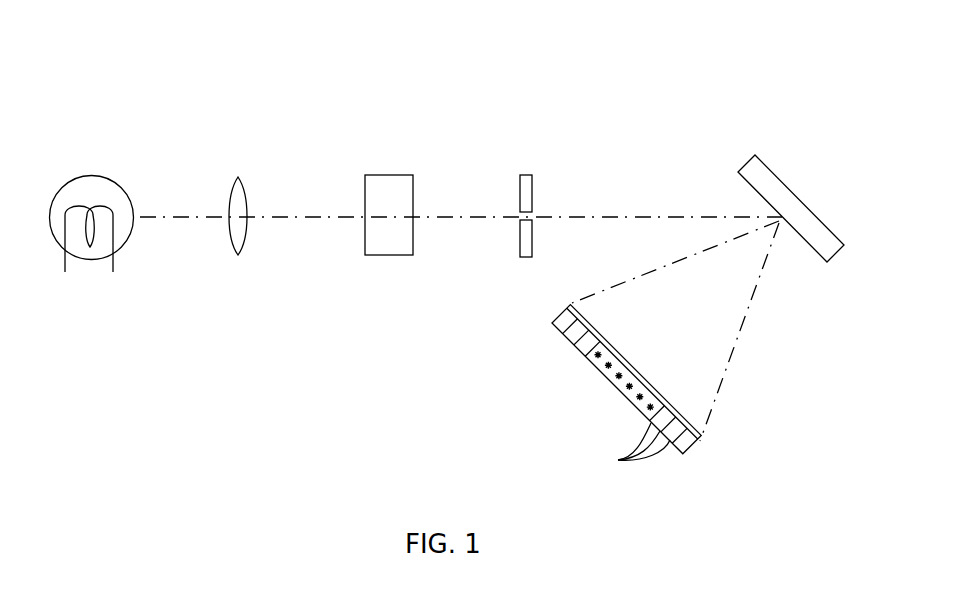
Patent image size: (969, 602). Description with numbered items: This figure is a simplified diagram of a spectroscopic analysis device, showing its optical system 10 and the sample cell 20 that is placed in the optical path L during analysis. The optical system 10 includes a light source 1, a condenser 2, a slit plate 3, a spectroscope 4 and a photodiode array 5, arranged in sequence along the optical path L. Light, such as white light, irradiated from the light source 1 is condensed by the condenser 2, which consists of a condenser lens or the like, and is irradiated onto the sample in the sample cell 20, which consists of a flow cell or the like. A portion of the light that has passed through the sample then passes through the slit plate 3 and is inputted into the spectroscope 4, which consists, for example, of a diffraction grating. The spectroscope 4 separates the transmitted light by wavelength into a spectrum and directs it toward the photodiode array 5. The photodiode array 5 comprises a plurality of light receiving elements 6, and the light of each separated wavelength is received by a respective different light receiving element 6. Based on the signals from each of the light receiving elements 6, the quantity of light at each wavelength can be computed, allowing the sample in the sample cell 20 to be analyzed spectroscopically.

The optical system 10 is at (674, 90).
The light source 1 is at (95, 177).
The condenser 2 is at (238, 177).
The sample cell 20 is at (383, 255).
The slit plate 3 is at (530, 175).
The spectroscope 4 is at (777, 175).
The photodiode array 5 is at (588, 386).
The light receiving elements 6 is at (630, 449).
The optical path L is at (180, 218).